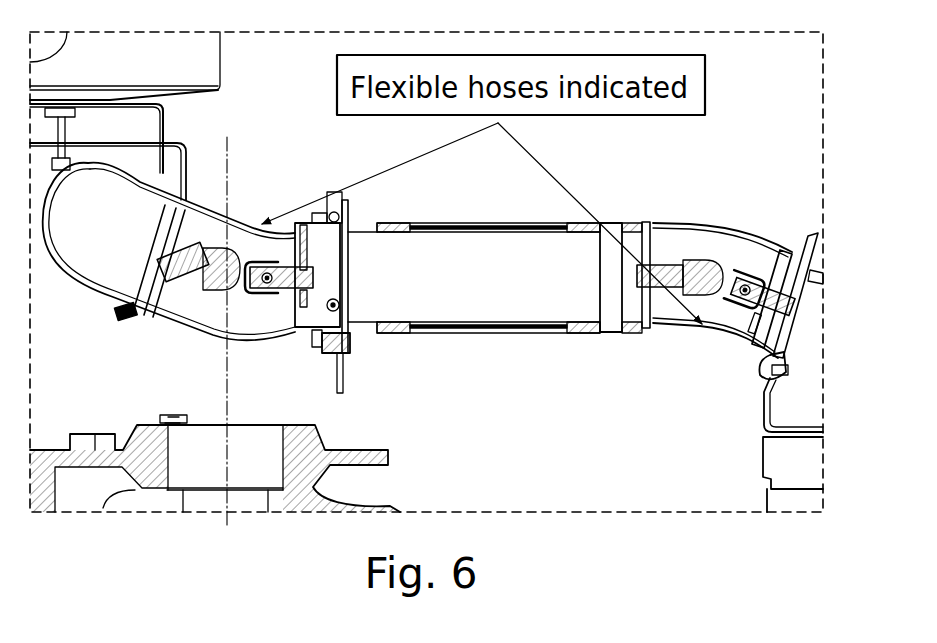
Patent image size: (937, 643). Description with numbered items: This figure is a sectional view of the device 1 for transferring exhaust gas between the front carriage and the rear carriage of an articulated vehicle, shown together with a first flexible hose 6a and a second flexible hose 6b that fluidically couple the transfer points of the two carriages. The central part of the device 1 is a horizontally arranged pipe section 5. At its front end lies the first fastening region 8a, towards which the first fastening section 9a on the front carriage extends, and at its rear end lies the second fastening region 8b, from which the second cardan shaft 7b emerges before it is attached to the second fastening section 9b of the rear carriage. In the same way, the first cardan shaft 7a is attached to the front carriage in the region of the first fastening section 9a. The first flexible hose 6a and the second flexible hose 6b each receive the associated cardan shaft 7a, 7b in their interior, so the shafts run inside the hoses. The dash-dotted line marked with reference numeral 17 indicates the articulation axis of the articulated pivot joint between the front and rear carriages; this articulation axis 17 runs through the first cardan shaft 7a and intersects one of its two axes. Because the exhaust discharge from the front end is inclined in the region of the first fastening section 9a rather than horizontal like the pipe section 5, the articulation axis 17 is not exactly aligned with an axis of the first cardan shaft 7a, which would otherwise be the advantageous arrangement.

The device for transferring exhaust gas 1 is at (652, 200).
The pipe section 5 is at (493, 300).
The first flexible hose 6a is at (218, 332).
The second flexible hose 6b is at (704, 225).
The first cardan shaft 7a is at (202, 283).
The second cardan shaft 7b is at (723, 265).
The first fastening region 8a is at (288, 218).
The second fastening region 8b is at (650, 333).
The first fastening section 9a is at (104, 337).
The second fastening section 9b is at (760, 352).
The articulation axis 17 is at (229, 152).